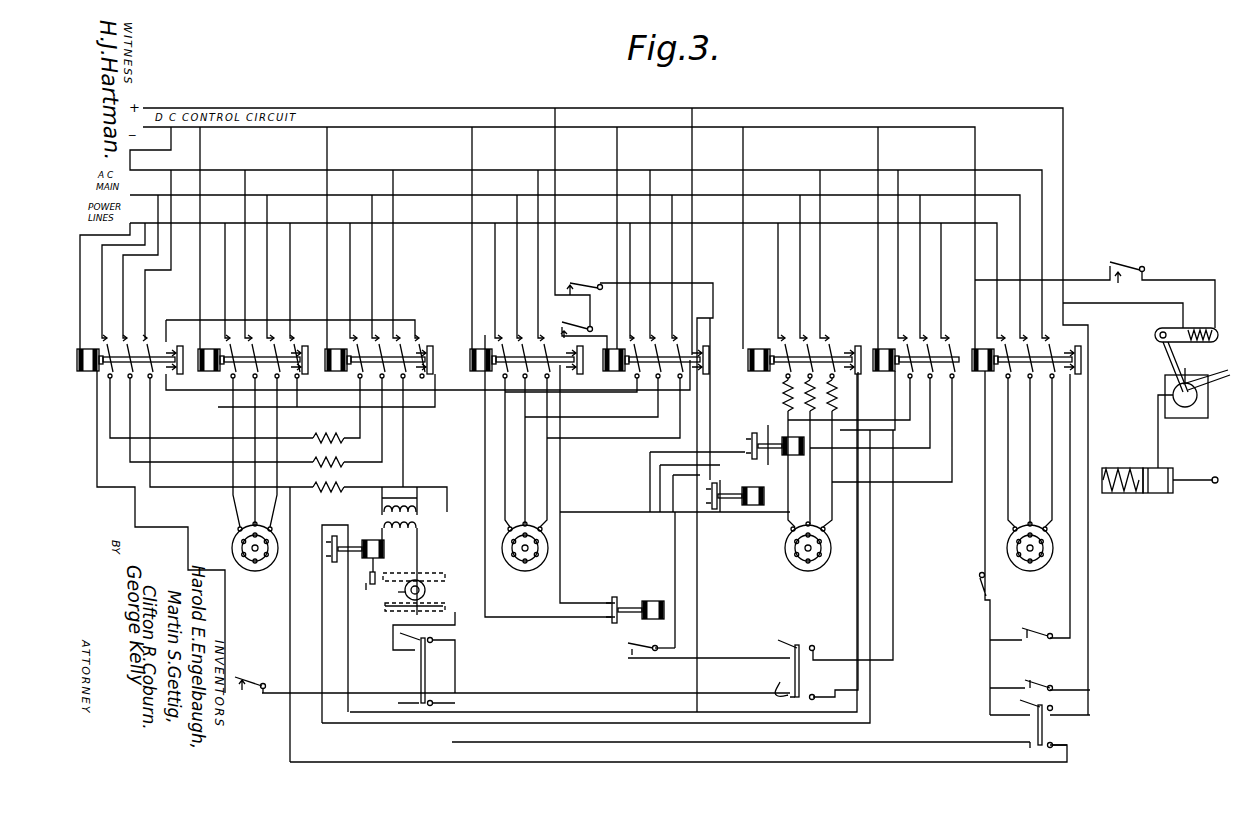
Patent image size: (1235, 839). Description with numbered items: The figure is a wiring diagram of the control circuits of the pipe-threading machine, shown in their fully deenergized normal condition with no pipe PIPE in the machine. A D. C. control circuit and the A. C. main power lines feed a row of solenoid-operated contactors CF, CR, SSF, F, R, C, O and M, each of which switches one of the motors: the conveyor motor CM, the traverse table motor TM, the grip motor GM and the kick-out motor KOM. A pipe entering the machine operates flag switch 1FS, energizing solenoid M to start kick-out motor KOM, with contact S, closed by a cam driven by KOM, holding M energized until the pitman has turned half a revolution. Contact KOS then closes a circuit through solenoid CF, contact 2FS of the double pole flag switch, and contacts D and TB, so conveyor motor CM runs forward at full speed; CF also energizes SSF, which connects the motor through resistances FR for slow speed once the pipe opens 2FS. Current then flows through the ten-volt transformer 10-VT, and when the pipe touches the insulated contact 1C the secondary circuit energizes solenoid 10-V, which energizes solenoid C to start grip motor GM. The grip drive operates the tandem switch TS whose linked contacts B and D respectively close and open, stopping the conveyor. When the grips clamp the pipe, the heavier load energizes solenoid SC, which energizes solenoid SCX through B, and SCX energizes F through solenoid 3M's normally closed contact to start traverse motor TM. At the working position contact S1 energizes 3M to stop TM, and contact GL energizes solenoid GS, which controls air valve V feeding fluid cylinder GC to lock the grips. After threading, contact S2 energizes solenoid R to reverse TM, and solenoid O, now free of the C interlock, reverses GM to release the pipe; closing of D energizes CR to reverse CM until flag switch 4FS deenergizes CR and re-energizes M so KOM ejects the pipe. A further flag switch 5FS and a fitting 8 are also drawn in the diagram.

The solenoid CF is at (148, 518).
The solenoid CR is at (253, 366).
The solenoid SSF is at (375, 365).
The solenoid F is at (526, 365).
The solenoid R is at (656, 365).
The solenoid C is at (804, 364).
The solenoid O is at (916, 364).
The solenoid M is at (1023, 364).
The resistances FR is at (278, 445).
The 10-volt transformer 10-VT is at (378, 551).
The solenoid 10-V is at (368, 624).
The insulated contact 1C is at (363, 579).
The pipe fitting 8 is at (414, 592).
The pipe PIPE is at (430, 575).
The conveyor motor CM is at (255, 485).
The traverse table motor TM is at (525, 485).
The grip motor GM is at (810, 485).
The kick-out motor KOM is at (1030, 485).
The solenoid SC is at (775, 448).
The solenoid SCX is at (735, 420).
The solenoid 3M is at (640, 580).
The contact TB is at (696, 646).
The double pole flag switch 2FS is at (420, 659).
The contact KOS is at (250, 694).
The tandem switch TS is at (841, 536).
The contact B is at (790, 636).
The contact D is at (781, 682).
The contact S is at (1030, 507).
The flag switch 1FS is at (1040, 678).
The flag switch 4FS is at (1040, 718).
The limit switch 5FS is at (969, 543).
The contact GL is at (1095, 295).
The solenoid GS is at (1140, 347).
The air valve V is at (1197, 402).
The fluid cylinder GC is at (1160, 444).
The contact S1 is at (640, 488).
The contact S2 is at (584, 328).